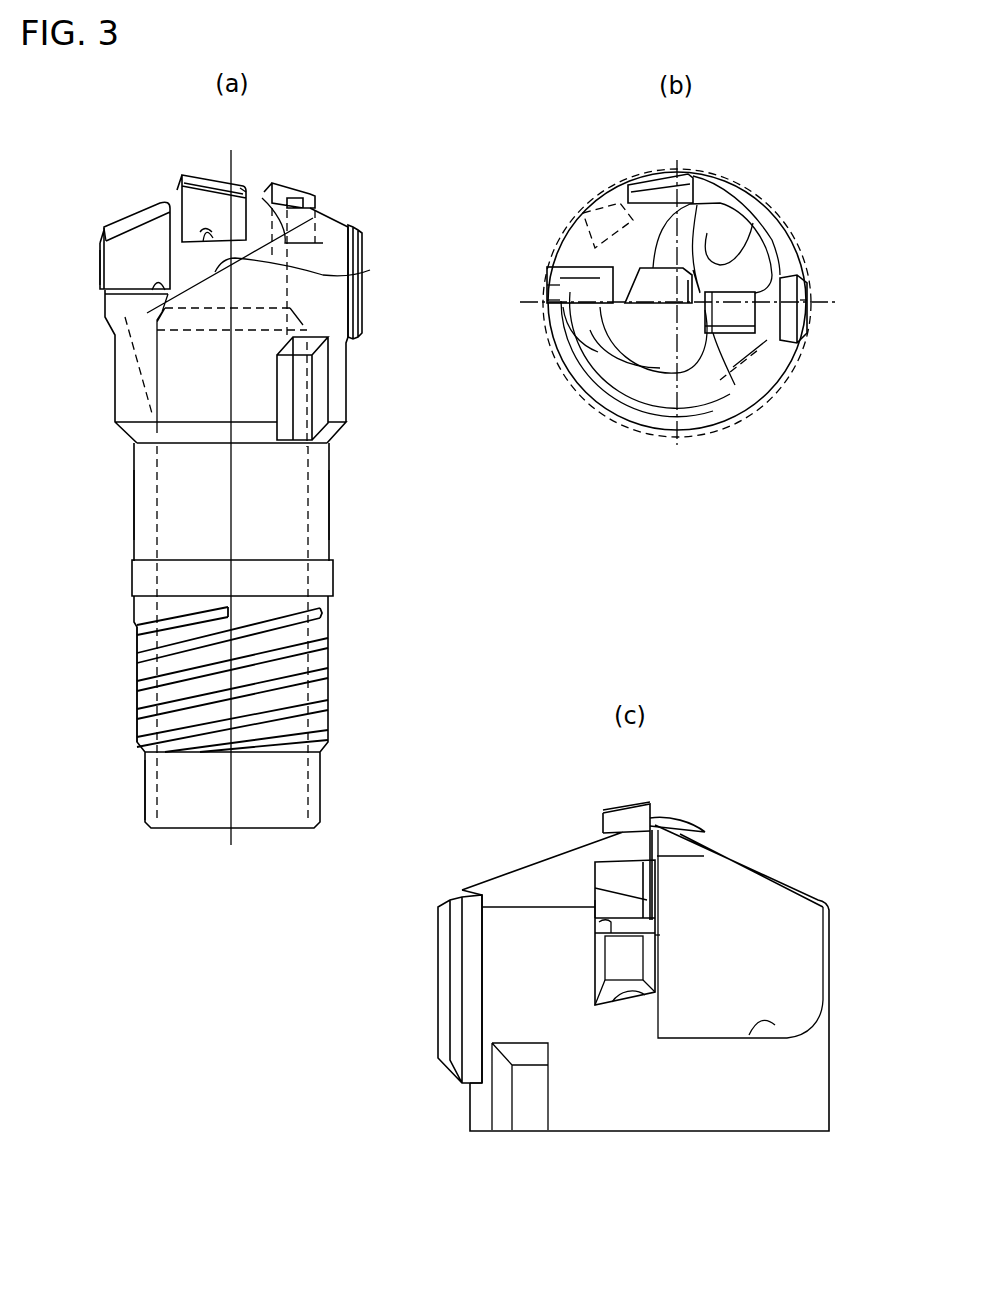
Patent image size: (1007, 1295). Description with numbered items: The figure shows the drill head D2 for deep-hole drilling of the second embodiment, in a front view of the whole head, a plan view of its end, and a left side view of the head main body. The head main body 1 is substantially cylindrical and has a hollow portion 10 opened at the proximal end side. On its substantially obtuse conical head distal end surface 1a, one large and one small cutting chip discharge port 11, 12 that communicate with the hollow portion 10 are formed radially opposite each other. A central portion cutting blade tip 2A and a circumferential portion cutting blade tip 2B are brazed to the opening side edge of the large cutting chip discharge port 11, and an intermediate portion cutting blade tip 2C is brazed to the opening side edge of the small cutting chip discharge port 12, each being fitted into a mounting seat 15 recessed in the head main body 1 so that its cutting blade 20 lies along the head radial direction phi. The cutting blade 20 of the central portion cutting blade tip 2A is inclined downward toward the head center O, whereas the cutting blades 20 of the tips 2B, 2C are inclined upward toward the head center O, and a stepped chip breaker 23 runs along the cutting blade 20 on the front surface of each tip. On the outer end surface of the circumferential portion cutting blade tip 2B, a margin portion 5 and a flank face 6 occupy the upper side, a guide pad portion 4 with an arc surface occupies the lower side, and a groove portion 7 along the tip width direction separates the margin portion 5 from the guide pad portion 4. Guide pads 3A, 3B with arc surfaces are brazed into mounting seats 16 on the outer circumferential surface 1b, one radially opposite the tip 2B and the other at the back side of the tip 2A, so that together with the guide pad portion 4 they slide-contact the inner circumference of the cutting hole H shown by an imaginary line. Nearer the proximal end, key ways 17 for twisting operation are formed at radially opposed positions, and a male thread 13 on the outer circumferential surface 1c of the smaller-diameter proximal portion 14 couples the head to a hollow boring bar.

The head main body 1 is at (107, 398).
The head distal end surface 1a is at (597, 220).
The outer circumferential surface 1b is at (753, 200).
The outer circumferential surface 1c is at (142, 571).
The central portion cutting blade tip 2A is at (187, 172).
The circumferential portion cutting blade tip 2B is at (127, 209).
The intermediate portion cutting blade tip 2C is at (741, 293).
The guide pad 3A is at (810, 337).
The guide pad 3B is at (653, 176).
The guide pad portion 4 is at (102, 260).
The margin portion 5 is at (104, 240).
The flank face 6 is at (561, 279).
The groove portion 7 is at (602, 926).
The hollow portion 10 is at (160, 777).
The large cutting chip discharge port 11 is at (370, 270).
The small cutting chip discharge port 12 is at (750, 257).
The male thread 13 is at (332, 659).
The proximal portion 14 is at (137, 675).
The mounting seat 15 is at (205, 233).
The mounting seat 16 is at (807, 332).
The key way 17 is at (317, 393).
The cutting blade 20 is at (207, 176).
The stepped chip breaker 23 is at (213, 180).
The drill head for deep-hole drilling D2 is at (336, 506).
The head center O is at (232, 838).
The cutting hole H is at (710, 432).
The head radial direction phi is at (812, 303).